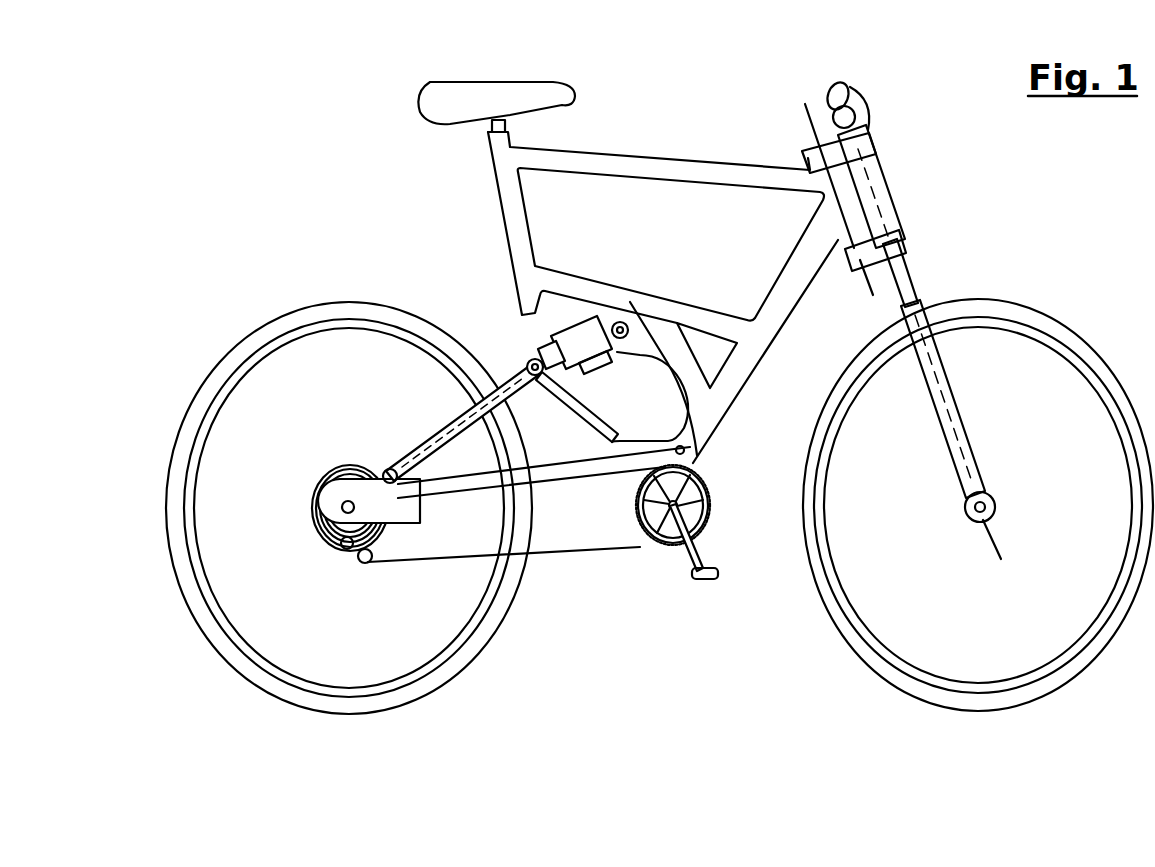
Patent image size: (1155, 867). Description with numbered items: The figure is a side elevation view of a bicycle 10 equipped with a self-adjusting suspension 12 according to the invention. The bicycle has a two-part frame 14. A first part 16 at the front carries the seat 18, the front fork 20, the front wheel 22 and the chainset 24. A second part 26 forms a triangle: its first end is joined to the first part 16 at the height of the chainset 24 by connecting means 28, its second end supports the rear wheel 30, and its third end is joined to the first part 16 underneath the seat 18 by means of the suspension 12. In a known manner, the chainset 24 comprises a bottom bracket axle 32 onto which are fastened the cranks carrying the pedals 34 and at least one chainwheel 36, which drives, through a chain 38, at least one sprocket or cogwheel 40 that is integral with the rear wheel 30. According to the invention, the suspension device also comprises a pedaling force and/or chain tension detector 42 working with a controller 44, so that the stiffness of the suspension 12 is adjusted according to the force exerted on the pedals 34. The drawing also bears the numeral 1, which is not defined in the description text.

The bicycle 10 is at (661, 130).
The frame 1 is at (720, 170).
The self-adjusting suspension 12 is at (546, 331).
The two-part frame 14 is at (538, 138).
The first part 16 is at (732, 392).
The seat 18 is at (425, 94).
The front fork 20 is at (905, 265).
The front wheel 22 is at (1065, 335).
The chainset 24 is at (717, 520).
The second part 26 is at (562, 470).
The connecting means 28 is at (694, 445).
The rear wheel 30 is at (318, 322).
The bottom bracket axle 32 is at (650, 505).
The pedals 34 is at (704, 579).
The chainwheel 36 is at (640, 522).
The chain 38 is at (402, 567).
The sprocket 40 is at (340, 485).
The pedaling force and/or chain tension detector 42 is at (705, 497).
The controller 44 is at (620, 326).